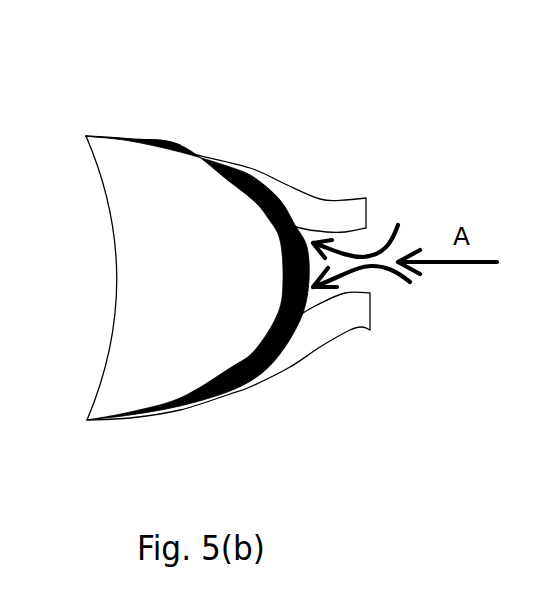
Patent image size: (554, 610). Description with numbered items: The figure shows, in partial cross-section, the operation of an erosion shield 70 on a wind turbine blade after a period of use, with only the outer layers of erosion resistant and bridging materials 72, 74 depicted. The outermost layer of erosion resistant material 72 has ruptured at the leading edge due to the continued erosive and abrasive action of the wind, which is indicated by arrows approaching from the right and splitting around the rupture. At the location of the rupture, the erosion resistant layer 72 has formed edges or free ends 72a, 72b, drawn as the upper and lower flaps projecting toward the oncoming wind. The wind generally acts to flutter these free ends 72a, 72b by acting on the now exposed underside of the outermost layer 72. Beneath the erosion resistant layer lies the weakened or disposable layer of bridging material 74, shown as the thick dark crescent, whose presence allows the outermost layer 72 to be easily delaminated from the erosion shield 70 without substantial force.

The erosion shield 70 is at (141, 102).
The erosion resistant material 72 is at (277, 191).
The free end 72a is at (385, 183).
The free end 72b is at (387, 347).
The bridging material 74 is at (250, 372).